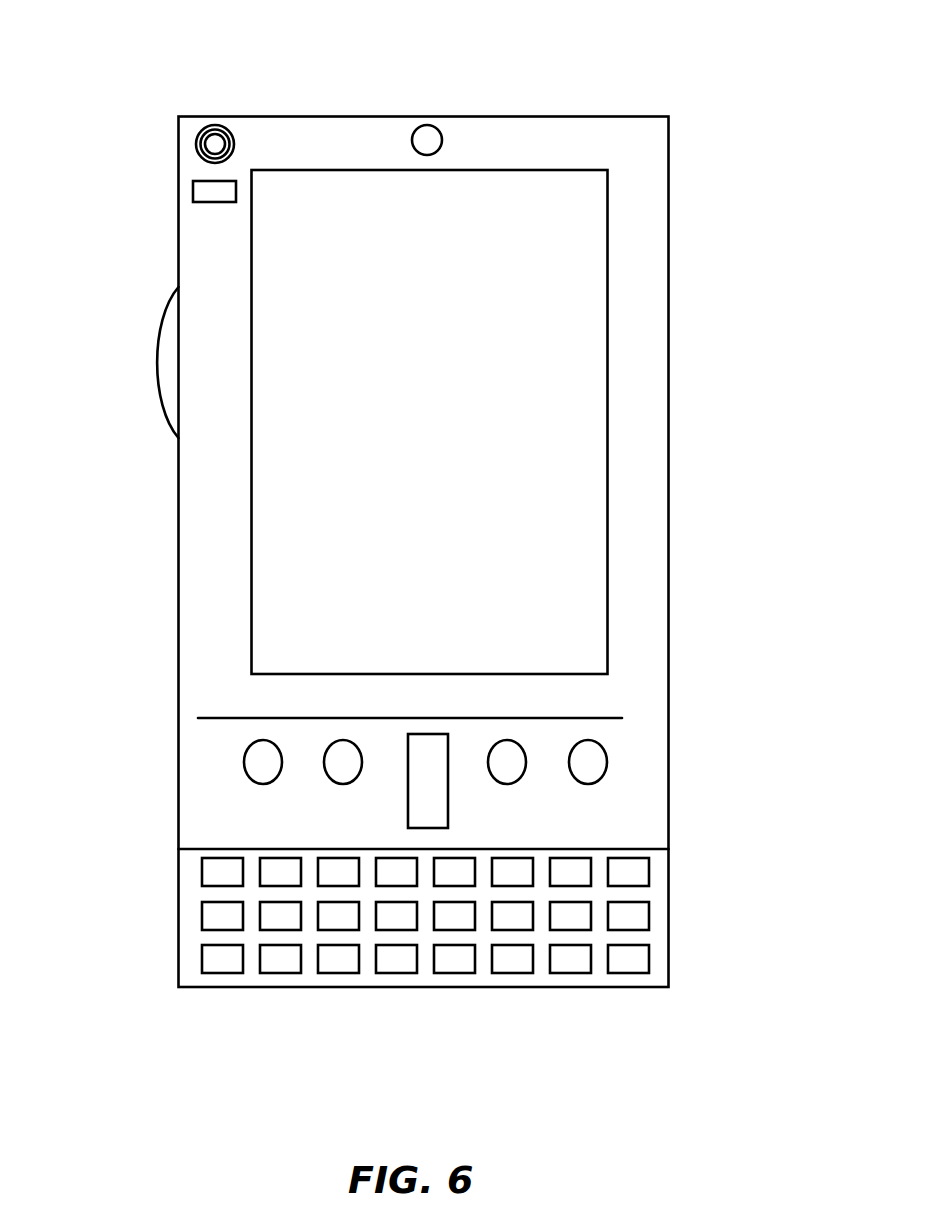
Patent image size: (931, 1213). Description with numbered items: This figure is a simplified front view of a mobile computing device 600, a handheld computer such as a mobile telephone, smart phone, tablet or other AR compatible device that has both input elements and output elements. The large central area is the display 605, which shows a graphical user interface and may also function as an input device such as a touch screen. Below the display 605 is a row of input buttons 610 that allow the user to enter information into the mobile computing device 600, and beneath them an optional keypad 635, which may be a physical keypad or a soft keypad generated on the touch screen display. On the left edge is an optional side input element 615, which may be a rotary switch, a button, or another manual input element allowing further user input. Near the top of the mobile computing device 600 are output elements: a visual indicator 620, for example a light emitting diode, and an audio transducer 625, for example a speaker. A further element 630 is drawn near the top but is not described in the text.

The mobile computing device 600 is at (657, 134).
The display 605 is at (360, 588).
The input buttons 610 is at (427, 787).
The side input element 615 is at (168, 361).
The visual indicator 620 is at (193, 196).
The audio transducer 625 is at (196, 145).
The speaker 630 is at (441, 136).
The keypad 635 is at (187, 963).